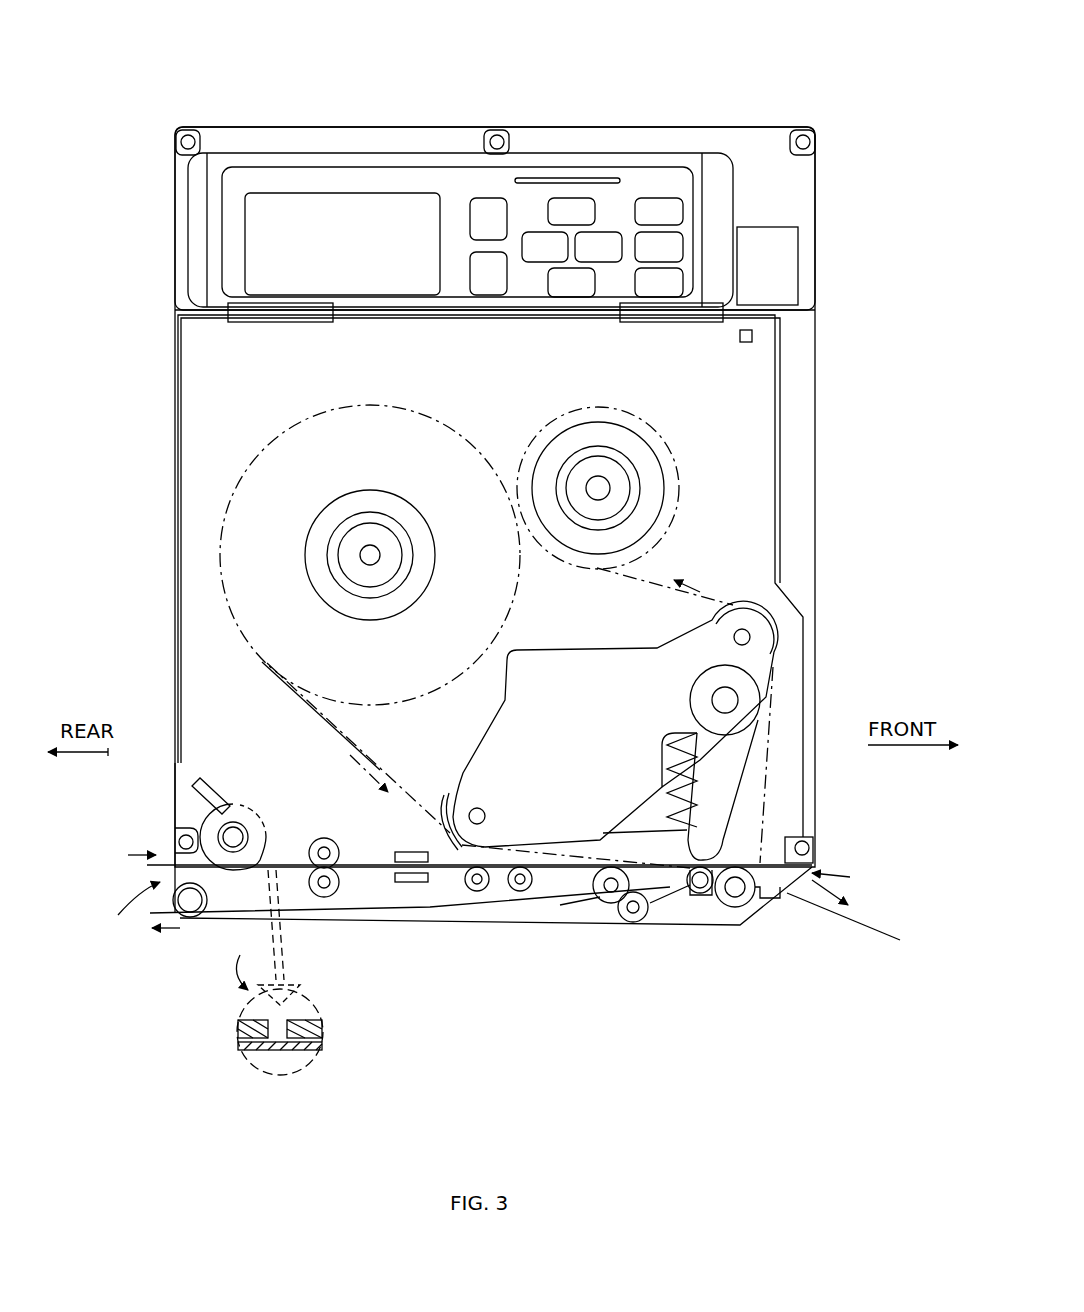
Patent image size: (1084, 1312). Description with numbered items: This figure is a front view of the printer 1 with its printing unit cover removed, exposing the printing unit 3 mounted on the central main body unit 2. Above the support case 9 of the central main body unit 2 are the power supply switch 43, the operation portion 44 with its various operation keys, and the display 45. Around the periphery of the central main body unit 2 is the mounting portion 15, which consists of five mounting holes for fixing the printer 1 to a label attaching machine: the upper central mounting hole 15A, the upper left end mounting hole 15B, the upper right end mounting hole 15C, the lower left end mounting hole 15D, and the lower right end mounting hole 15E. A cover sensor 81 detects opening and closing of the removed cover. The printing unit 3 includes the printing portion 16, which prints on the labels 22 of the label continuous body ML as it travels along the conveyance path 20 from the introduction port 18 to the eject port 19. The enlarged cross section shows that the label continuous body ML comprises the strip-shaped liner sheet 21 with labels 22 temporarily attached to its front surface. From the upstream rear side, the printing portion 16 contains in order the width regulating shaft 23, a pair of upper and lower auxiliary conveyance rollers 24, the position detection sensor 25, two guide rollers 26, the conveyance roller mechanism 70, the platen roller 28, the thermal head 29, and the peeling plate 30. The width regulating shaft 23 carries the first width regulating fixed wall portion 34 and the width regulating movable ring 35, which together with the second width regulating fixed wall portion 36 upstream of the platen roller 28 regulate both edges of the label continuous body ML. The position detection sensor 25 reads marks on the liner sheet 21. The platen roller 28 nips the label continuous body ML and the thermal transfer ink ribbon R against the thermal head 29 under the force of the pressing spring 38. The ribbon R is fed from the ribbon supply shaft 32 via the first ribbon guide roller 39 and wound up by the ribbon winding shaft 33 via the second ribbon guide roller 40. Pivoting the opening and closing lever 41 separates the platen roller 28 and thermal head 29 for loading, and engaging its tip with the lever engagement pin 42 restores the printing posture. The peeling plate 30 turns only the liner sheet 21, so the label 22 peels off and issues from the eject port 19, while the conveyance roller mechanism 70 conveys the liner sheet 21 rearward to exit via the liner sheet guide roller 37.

The printer 1 is at (707, 84).
The central main body unit 2 is at (817, 190).
The printing unit 3 is at (577, 988).
The support case 9 is at (783, 386).
The mounting portion 15 is at (488, 448).
The upper central mounting hole 15A is at (496, 133).
The upper left end mounting hole 15B is at (186, 134).
The upper right end mounting hole 15C is at (803, 134).
The lower left end mounting hole 15D is at (176, 835).
The lower right end mounting hole 15E is at (808, 848).
The printing portion 16 is at (780, 795).
The introduction port 18 is at (144, 916).
The eject port 19 is at (846, 898).
The conveyance path 20 is at (374, 856).
The liner sheet 21 is at (562, 907).
The label 22 is at (882, 935).
The width regulating shaft 23 is at (235, 830).
The auxiliary conveyance rollers 24 is at (324, 897).
The position detection sensor 25 is at (410, 884).
The guide rollers 26 is at (520, 892).
The platen roller 28 is at (742, 903).
The thermal head 29 is at (725, 905).
The peeling plate 30 is at (775, 900).
The ribbon supply shaft 32 is at (395, 535).
The ribbon winding shaft 33 is at (628, 472).
The first width regulating fixed wall portion 34 is at (258, 824).
The width regulating movable ring 35 is at (198, 786).
The second width regulating fixed wall portion 36 is at (655, 893).
The liner sheet guide roller 37 is at (190, 915).
The pressing spring 38 is at (662, 787).
The first ribbon guide roller 39 is at (449, 810).
The second ribbon guide roller 40 is at (716, 612).
The opening and closing lever 41 is at (698, 715).
The lever engagement pin 42 is at (700, 895).
The power supply switch 43 is at (798, 262).
The operation portion 44 is at (604, 210).
The display 45 is at (318, 212).
The conveyance roller mechanism 70 is at (611, 908).
The cover sensor 81 is at (753, 336).
The thermal transfer ink ribbon R is at (352, 738).
The label continuous body ML is at (272, 1060).